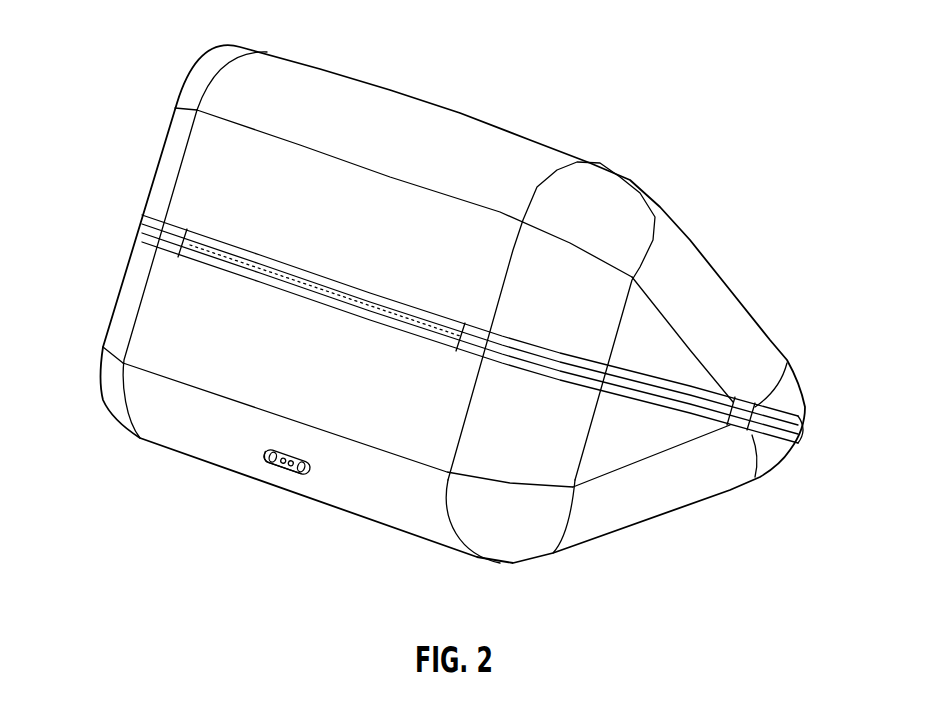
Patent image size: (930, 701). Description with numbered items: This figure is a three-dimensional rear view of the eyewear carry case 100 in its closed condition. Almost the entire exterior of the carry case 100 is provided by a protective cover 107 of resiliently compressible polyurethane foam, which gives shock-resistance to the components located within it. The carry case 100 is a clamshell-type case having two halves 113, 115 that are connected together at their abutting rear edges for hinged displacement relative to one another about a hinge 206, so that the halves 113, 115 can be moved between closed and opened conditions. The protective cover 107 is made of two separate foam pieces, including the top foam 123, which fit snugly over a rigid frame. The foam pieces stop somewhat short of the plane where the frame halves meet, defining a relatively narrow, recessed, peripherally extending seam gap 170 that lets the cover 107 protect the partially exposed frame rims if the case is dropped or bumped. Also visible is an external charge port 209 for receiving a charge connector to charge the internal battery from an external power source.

The carry case 100 is at (117, 30).
The protective cover 107 is at (388, 230).
The half 113 is at (692, 285).
The half 115 is at (670, 492).
The top foam 123 is at (612, 198).
The seam gap 170 is at (545, 342).
The hinge 206 is at (298, 288).
The charge port 209 is at (270, 463).